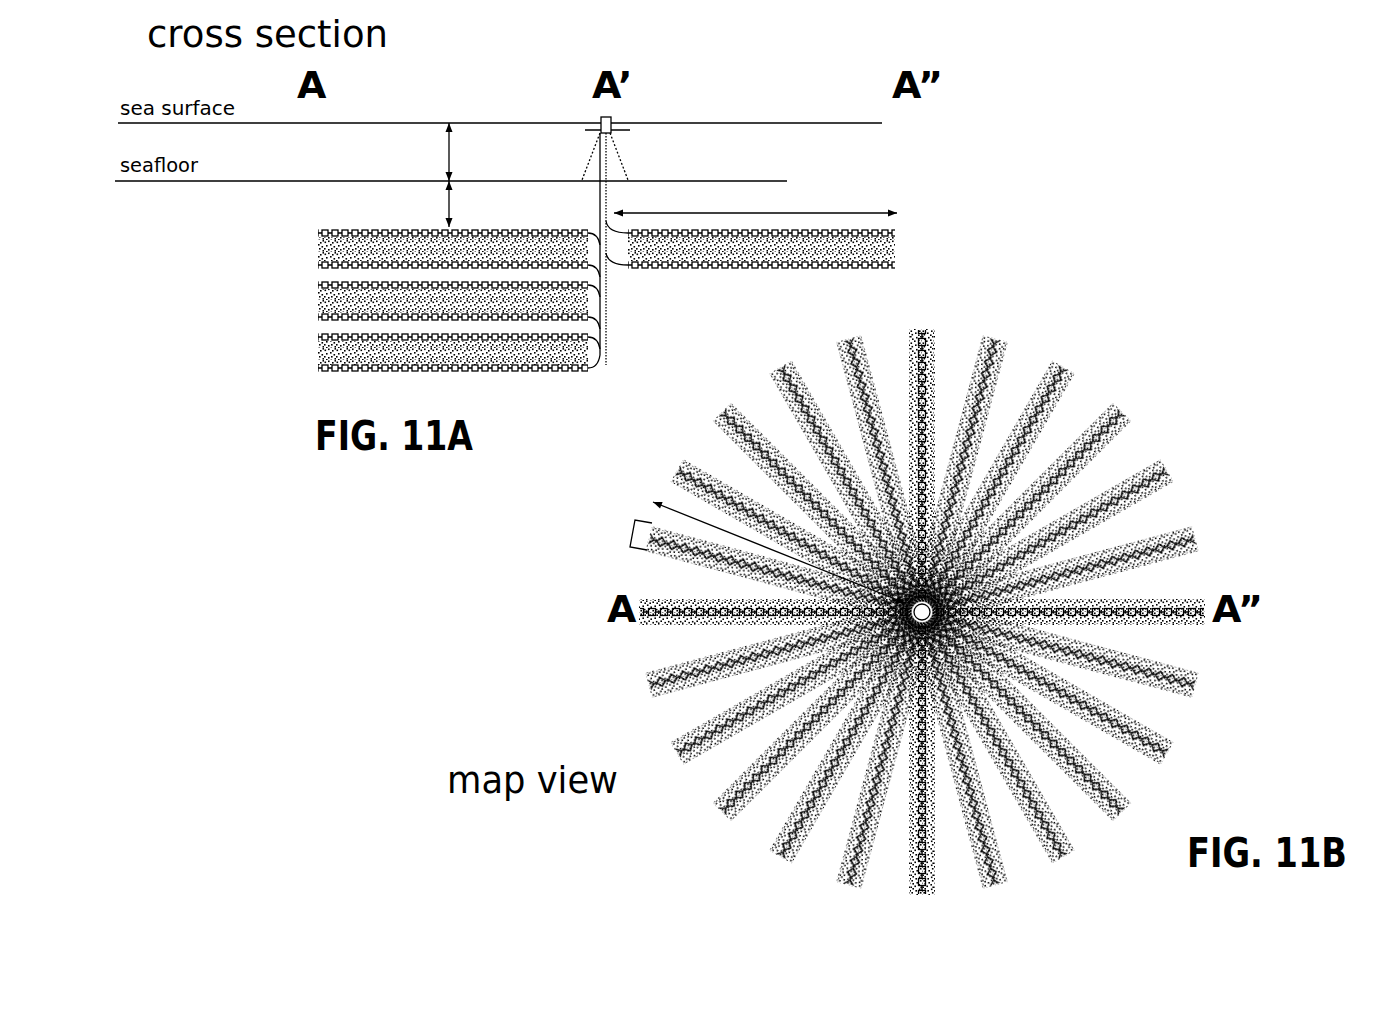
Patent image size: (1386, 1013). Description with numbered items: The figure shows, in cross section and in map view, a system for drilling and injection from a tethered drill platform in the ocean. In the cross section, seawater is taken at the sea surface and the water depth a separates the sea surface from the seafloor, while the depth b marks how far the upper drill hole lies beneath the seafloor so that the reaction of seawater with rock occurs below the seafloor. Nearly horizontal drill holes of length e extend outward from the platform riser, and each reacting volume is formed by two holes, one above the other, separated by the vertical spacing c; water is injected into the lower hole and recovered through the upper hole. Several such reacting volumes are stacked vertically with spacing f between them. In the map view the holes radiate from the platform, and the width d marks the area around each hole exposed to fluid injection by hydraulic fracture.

In FIG. 11A, the water depth a is at (465, 152).
In FIG. 11A, the depth of upper drill hole beneath seafloor b is at (465, 204).
In FIG. 11A, the vertical spacing between drill holes c is at (591, 297).
In FIG. 11B, the width of area exposed to fluid injection by hydraulic fracture d is at (756, 565).
In FIG. 11A, the length of drill holes e is at (755, 213).
In FIG. 11B, the length of drill holes e is at (779, 552).
In FIG. 11A, the spacing between reacting volumes f is at (272, 297).